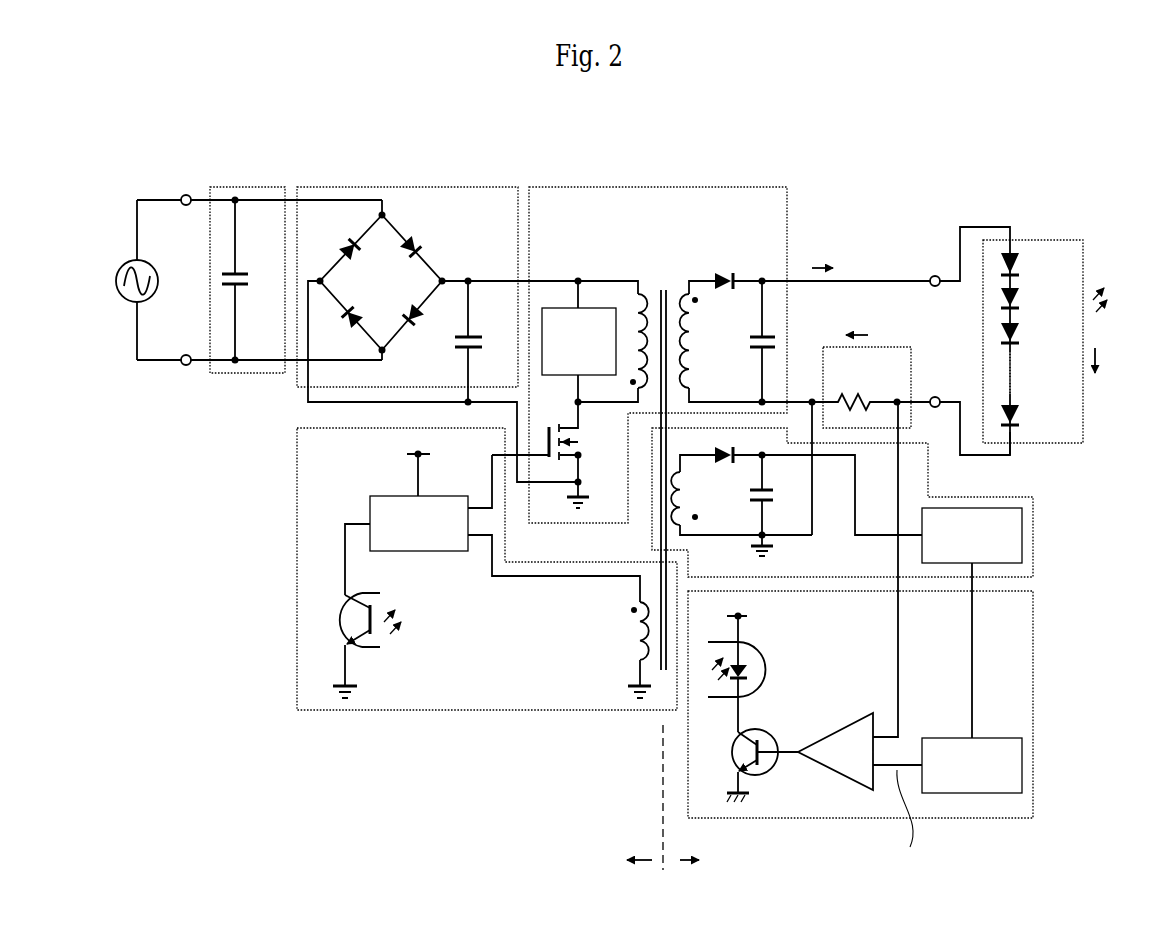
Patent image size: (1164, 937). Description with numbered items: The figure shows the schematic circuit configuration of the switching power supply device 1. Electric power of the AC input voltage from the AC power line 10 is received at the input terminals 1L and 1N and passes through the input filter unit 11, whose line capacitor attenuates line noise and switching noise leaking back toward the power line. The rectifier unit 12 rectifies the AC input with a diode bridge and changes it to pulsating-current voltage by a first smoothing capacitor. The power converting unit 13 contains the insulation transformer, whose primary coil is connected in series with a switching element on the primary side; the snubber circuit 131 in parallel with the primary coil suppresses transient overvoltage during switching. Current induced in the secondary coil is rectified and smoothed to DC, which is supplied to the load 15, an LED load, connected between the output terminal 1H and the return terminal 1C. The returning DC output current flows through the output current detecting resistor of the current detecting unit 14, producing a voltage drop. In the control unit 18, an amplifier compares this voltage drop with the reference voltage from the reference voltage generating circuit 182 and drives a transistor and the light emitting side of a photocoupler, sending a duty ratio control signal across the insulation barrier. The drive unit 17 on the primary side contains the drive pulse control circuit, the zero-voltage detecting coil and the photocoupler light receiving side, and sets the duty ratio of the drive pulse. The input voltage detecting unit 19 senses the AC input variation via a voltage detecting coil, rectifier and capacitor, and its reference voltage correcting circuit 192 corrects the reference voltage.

The switching power supply device 1 is at (84, 147).
The AC power line 10 is at (118, 266).
The input terminal 1L is at (186, 195).
The input terminal 1N is at (185, 366).
The input filter unit 11 is at (248, 187).
The rectifier unit 12 is at (410, 187).
The power converting unit 13 is at (660, 187).
The snubber circuit 131 is at (556, 308).
The current detecting unit 14 is at (900, 347).
The output terminal 1H is at (935, 275).
The return terminal 1C is at (937, 408).
The load 15 is at (1022, 238).
The drive unit 17 is at (295, 683).
The control unit 18 is at (1035, 690).
The reference voltage generating circuit 182 is at (1022, 767).
The input voltage detecting unit 19 is at (1033, 500).
The reference voltage correcting circuit 192 is at (1022, 535).